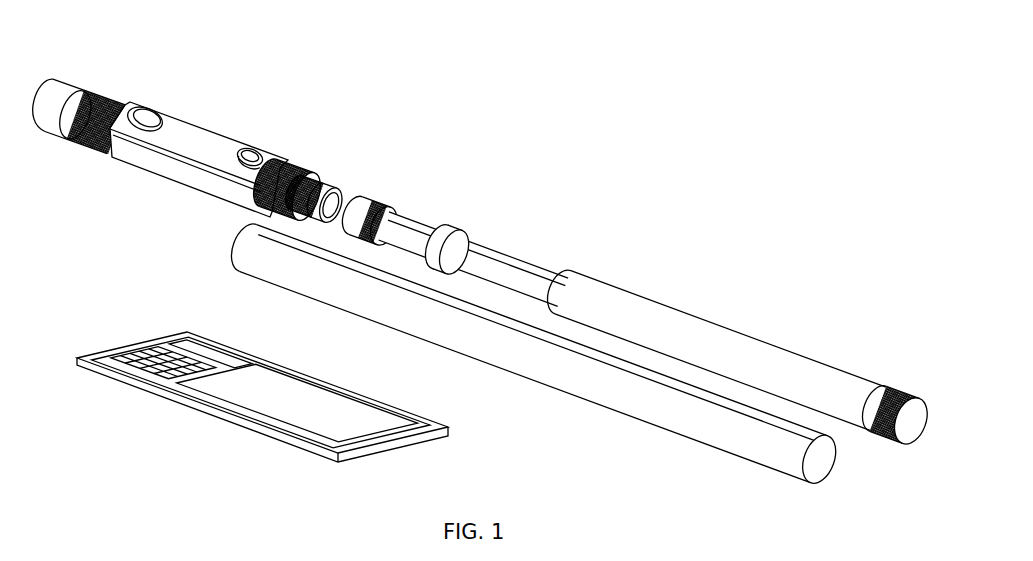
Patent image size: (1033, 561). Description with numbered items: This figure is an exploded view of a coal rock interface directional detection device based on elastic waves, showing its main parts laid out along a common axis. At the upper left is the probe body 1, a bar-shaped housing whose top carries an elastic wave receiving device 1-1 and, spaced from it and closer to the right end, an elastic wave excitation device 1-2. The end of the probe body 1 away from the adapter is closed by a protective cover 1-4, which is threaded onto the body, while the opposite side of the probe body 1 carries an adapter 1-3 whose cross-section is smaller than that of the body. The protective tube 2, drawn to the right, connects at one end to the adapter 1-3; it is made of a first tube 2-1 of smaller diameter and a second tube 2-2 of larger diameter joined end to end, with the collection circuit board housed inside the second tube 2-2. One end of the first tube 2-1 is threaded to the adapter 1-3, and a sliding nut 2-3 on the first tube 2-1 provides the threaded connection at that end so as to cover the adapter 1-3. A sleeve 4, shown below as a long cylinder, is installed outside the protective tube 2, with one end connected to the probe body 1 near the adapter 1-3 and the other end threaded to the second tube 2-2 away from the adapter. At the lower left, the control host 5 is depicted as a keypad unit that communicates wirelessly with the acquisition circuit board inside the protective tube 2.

The probe body 1 is at (202, 140).
The elastic wave receiving device 1-1 is at (152, 107).
The elastic wave excitation device 1-2 is at (258, 143).
The adapter 1-3 is at (328, 187).
The protective cover 1-4 is at (75, 82).
The protective tube 2 is at (635, 307).
The first tube 2-1 is at (527, 265).
The second tube 2-2 is at (737, 343).
The sliding nut 2-3 is at (452, 238).
The sleeve 4 is at (238, 243).
The control host 5 is at (107, 348).